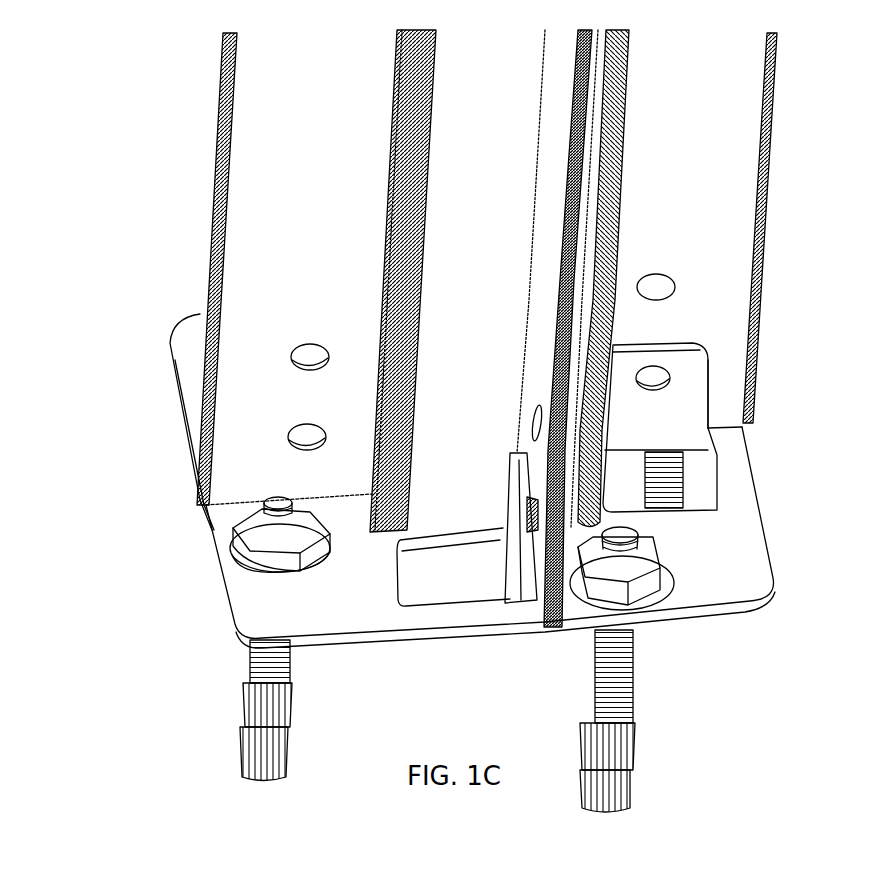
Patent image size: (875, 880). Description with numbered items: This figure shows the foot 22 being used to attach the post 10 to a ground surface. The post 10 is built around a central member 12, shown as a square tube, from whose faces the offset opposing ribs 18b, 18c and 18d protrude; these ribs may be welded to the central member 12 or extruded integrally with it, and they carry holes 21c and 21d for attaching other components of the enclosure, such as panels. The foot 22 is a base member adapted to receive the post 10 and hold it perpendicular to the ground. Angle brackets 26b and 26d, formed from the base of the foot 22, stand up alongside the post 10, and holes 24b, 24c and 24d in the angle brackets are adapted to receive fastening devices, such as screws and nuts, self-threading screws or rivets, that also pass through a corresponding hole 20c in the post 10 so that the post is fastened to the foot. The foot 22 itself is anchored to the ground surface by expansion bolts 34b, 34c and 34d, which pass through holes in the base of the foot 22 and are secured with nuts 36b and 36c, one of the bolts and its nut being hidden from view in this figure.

The post 10 is at (220, 87).
The central member 12 is at (433, 162).
The rib 18b is at (552, 632).
The rib 18c is at (248, 208).
The rib 18d is at (742, 152).
The hole 20c is at (290, 442).
The hole 21c is at (300, 358).
The hole 21d is at (677, 287).
The foot 22 is at (778, 540).
The hole 24b is at (520, 530).
The hole 24c is at (192, 422).
The hole 24d is at (670, 377).
The angle bracket 26b is at (515, 547).
The angle bracket 26d is at (687, 408).
The expansion bolt 34b is at (633, 747).
The expansion bolt 34c is at (245, 715).
The expansion bolt 34d is at (680, 485).
The nut 36b is at (650, 588).
The nut 36c is at (252, 543).